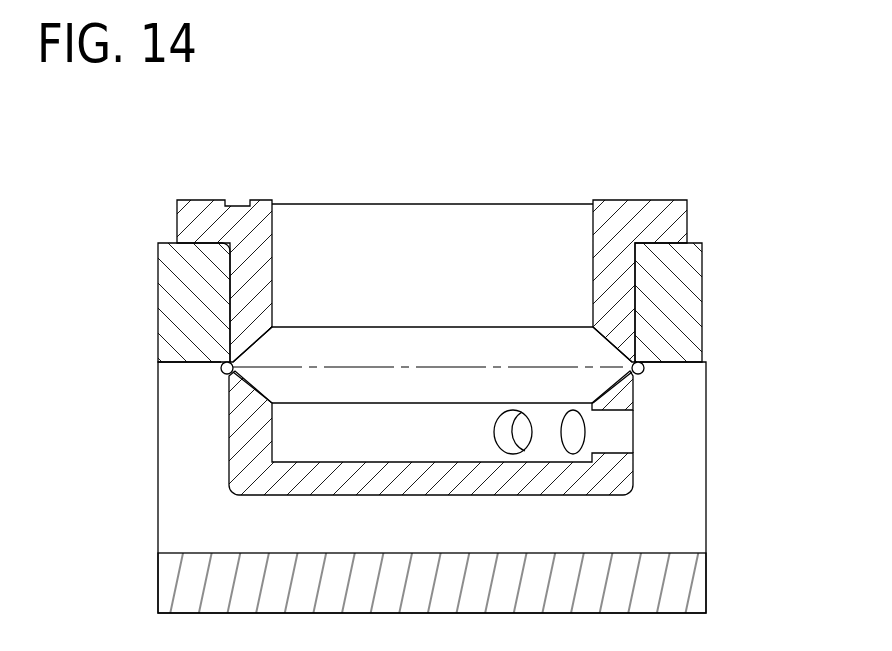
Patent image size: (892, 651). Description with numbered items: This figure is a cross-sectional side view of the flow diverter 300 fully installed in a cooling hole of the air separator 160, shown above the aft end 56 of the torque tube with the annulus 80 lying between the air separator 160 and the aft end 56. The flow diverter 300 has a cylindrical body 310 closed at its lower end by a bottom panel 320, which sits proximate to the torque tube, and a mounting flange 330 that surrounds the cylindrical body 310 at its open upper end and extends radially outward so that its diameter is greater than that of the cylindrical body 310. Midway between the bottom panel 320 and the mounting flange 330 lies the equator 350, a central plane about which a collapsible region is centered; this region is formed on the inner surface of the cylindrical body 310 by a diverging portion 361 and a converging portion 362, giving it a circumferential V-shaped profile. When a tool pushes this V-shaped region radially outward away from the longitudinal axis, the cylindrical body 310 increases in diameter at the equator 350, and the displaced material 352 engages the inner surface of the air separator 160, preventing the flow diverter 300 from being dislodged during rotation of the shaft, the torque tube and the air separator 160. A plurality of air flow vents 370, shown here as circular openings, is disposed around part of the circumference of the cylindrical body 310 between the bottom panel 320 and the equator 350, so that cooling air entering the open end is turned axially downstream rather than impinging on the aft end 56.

The flow diverter 300 is at (152, 153).
The annulus 80 is at (173, 447).
The aft end 56 is at (182, 580).
The air separator 160 is at (173, 292).
The cylindrical body 310 is at (652, 294).
The mounting flange 330 is at (653, 225).
The bottom panel 320 is at (298, 485).
The equator 350 is at (368, 367).
The displaced material 352 is at (644, 366).
The diverging portion 361 is at (583, 347).
The converging portion 362 is at (598, 396).
The air flow vents 370 is at (513, 445).